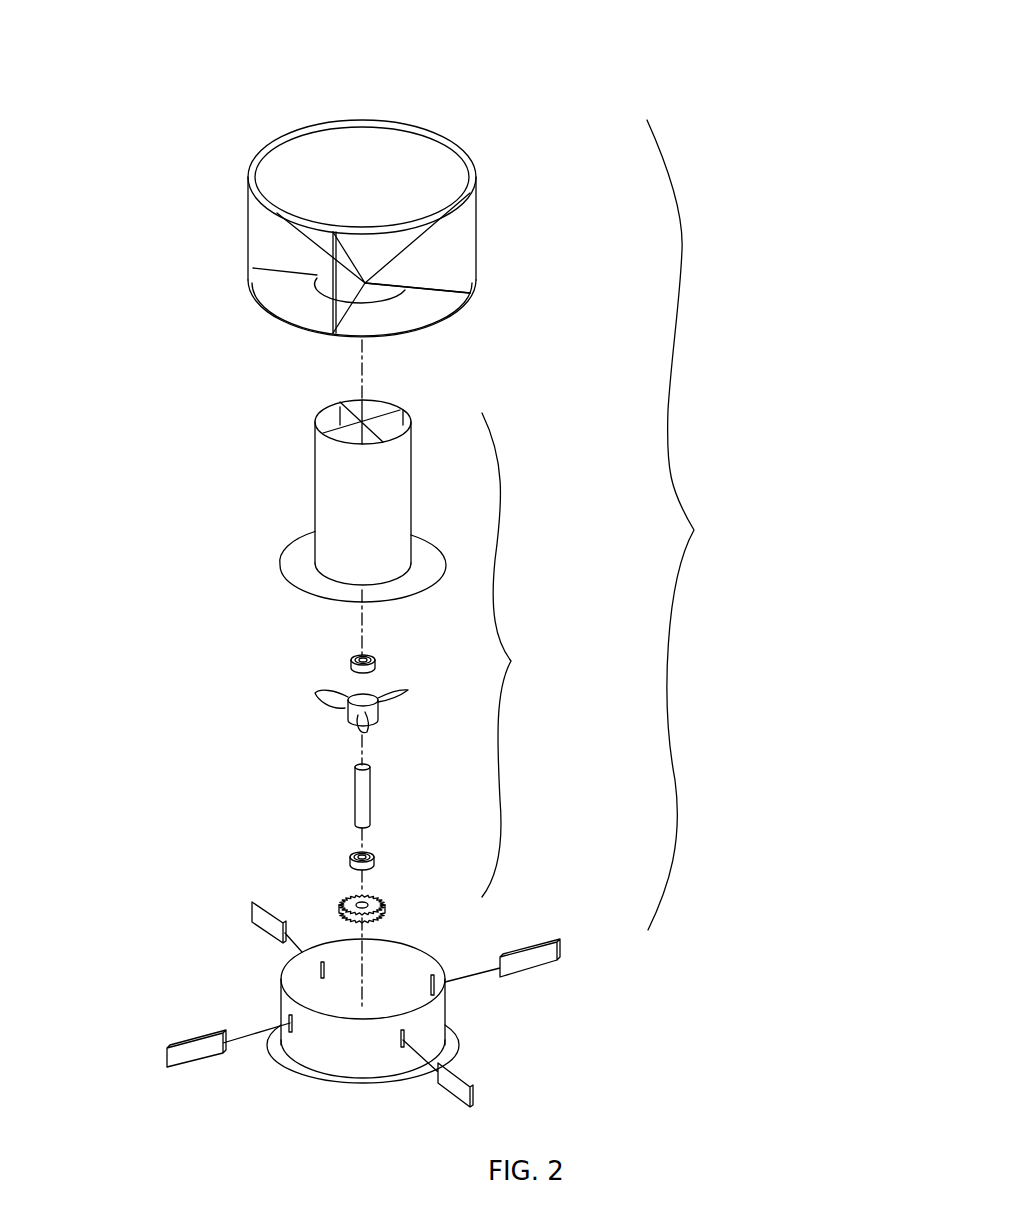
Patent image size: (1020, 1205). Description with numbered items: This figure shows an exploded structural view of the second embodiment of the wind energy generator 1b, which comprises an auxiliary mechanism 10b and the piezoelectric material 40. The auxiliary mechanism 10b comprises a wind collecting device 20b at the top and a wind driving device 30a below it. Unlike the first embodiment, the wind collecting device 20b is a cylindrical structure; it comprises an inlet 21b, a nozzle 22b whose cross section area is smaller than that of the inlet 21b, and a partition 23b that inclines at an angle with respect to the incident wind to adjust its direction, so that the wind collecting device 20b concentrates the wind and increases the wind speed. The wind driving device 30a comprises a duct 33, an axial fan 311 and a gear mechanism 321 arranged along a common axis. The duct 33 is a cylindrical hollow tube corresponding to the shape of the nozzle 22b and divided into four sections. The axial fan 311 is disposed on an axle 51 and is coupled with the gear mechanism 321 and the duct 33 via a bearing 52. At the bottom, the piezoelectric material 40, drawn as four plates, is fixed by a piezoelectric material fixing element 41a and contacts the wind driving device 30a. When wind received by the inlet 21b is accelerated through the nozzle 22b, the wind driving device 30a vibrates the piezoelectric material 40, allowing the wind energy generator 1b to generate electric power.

The wind energy generator 1b is at (593, 103).
The auxiliary mechanism 10b is at (698, 525).
The wind collecting device 20b is at (346, 246).
The inlet 21b is at (417, 272).
The nozzle 22b is at (373, 292).
The partition 23b is at (383, 252).
The wind driving device 30a is at (527, 655).
The duct 33 is at (338, 490).
The axial fan 311 is at (320, 699).
The gear mechanism 321 is at (348, 903).
The piezoelectric material 40 is at (533, 957).
The piezoelectric material fixing element 41a is at (367, 1067).
The axle 51 is at (363, 802).
The bearing 52 is at (376, 661).